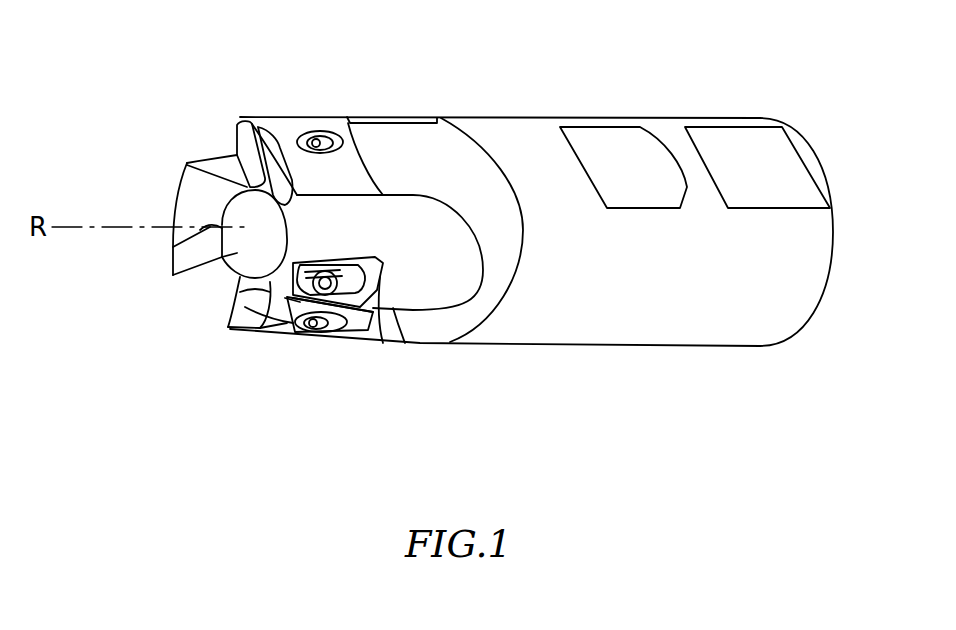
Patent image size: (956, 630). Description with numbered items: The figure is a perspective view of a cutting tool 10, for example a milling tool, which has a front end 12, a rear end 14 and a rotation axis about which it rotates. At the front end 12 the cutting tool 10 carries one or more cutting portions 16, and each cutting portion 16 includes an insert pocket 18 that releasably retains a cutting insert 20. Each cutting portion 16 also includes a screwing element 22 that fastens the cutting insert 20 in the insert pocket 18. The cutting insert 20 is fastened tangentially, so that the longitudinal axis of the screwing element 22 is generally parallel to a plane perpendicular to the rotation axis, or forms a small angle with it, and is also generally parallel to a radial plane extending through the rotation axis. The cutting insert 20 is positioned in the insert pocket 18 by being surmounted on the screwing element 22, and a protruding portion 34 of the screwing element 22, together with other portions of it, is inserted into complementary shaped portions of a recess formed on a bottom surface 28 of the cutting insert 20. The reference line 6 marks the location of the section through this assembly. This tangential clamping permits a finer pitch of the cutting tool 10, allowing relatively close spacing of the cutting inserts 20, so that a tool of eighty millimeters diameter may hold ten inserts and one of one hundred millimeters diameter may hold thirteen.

The clamping screw hole 6 is at (350, 263).
The cutting tool 10 is at (850, 422).
The front end 12 is at (305, 243).
The rear end 14 is at (769, 385).
The cutting portion 16 is at (313, 108).
The insert pocket 18 is at (248, 117).
The cutting insert 20 is at (240, 118).
The screwing element 22 is at (325, 138).
The bottom surface 28 is at (285, 325).
The protruding portion 34 is at (308, 263).